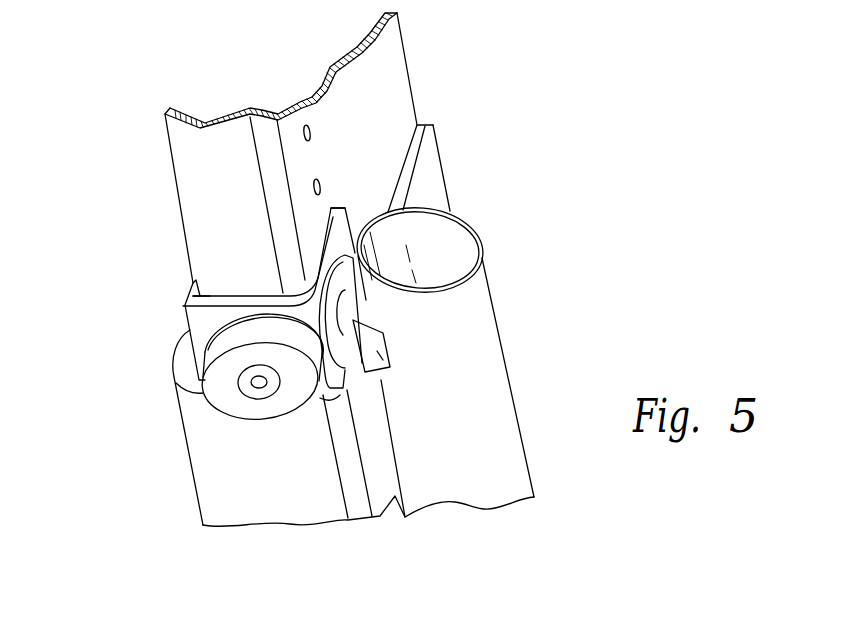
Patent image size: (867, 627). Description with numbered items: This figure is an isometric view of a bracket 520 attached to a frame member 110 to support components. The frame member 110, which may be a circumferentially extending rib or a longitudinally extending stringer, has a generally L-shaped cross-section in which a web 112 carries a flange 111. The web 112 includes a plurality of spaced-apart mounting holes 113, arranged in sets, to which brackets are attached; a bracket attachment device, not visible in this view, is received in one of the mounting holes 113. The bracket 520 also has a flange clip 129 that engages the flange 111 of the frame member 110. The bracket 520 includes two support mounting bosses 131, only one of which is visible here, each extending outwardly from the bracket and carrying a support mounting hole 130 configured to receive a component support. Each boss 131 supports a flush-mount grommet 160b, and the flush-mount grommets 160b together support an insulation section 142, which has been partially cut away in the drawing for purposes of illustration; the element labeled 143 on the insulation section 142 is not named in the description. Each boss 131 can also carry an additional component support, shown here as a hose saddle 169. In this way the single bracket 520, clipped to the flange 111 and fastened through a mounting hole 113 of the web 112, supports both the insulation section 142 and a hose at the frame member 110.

The frame member 110 is at (206, 52).
The flange 111 is at (173, 167).
The web 112 is at (397, 87).
The mounting holes 113 is at (317, 186).
The flange clip 129 is at (190, 297).
The support mounting hole 130 is at (259, 386).
The support mounting boss 131 is at (180, 392).
The insulation section 142 is at (437, 175).
The tube opening 143 is at (487, 277).
The flush-mount grommet 160b is at (346, 232).
The hose saddle 169 is at (394, 370).
The bracket 520 is at (184, 333).